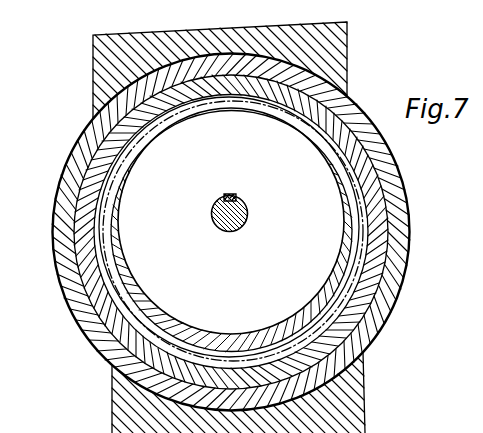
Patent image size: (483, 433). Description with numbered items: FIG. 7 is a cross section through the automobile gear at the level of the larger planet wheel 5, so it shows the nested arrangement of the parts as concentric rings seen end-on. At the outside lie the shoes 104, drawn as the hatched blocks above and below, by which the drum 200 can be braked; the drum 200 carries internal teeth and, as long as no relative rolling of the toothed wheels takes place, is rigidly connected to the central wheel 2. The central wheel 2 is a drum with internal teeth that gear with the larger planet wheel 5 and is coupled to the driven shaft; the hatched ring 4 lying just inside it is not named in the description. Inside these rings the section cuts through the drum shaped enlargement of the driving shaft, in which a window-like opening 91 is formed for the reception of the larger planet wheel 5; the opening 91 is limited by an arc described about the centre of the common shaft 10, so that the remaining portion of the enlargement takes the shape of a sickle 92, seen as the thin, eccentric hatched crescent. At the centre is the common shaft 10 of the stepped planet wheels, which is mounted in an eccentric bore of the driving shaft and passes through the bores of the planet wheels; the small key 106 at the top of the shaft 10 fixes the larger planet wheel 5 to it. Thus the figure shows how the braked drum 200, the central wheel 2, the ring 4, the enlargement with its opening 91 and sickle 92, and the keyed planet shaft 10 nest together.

The central wheel 2 is at (62, 197).
The inner bearing ring 4 is at (97, 225).
The larger planet wheel 5 is at (105, 280).
The common shaft 10 is at (249, 208).
The window-like opening 91 is at (318, 224).
The sickle 92 is at (100, 333).
The shoes 104 is at (338, 50).
The key 106 is at (229, 192).
The drum 200 is at (82, 138).